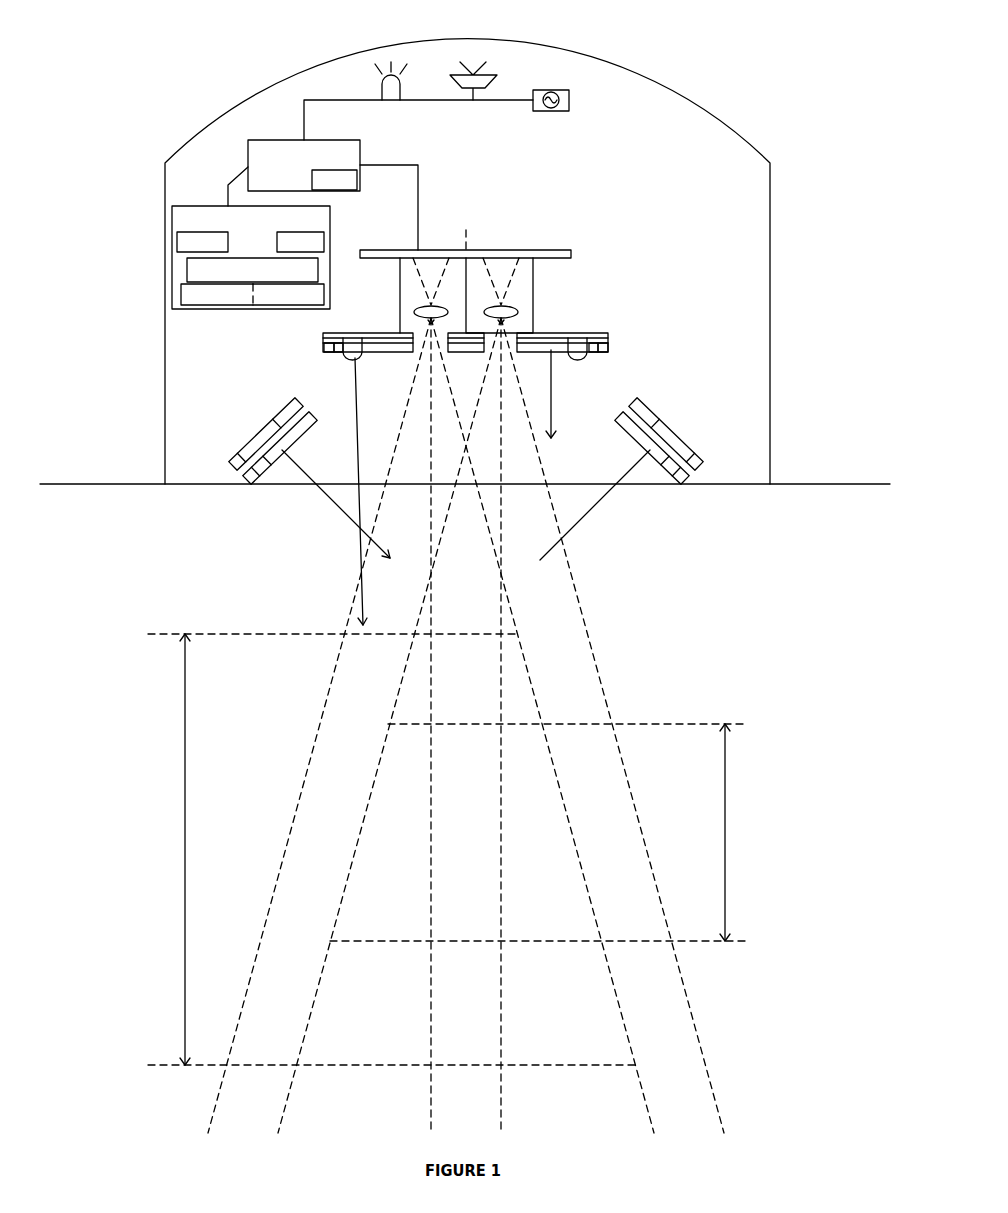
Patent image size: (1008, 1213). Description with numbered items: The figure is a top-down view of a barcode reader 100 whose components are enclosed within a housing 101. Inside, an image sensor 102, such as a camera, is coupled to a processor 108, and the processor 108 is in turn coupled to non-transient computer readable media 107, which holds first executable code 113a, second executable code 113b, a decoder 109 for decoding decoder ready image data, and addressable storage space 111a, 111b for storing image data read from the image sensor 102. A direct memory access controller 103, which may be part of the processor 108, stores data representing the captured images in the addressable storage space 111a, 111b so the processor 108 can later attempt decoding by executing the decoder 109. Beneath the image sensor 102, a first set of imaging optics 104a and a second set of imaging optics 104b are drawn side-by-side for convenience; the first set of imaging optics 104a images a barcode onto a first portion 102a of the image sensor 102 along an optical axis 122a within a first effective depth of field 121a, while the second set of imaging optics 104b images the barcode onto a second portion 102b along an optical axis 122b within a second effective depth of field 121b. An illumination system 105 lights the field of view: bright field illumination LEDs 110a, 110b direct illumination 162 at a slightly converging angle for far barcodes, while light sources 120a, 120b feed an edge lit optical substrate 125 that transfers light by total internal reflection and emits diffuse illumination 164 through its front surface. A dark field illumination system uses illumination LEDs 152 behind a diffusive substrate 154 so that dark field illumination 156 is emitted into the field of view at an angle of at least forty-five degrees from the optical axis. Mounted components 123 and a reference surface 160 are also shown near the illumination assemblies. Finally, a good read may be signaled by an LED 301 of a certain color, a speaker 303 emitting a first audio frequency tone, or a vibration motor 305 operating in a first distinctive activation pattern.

The barcode reader 100 is at (172, 110).
The housing 101 is at (722, 120).
The image sensor 102 is at (502, 250).
The first portion of the image sensor 102a is at (546, 250).
The second portion of the image sensor 102b is at (410, 250).
The direct memory access controller 103 is at (360, 180).
The first set of imaging optics 104a is at (520, 312).
The second set of imaging optics 104b is at (412, 312).
The illumination system 105 is at (320, 335).
The non-transient computer readable media 107 is at (251, 257).
The processor 108 is at (280, 189).
The decoder 109 is at (252, 270).
The illumination LED 110a is at (343, 360).
The illumination LED 110b is at (588, 360).
The addressable storage space 111a is at (288, 294).
The addressable storage space 111b is at (217, 294).
The first executable code 113a is at (202, 242).
The second executable code 113b is at (300, 242).
The light source 120a is at (322, 347).
The light source 120b is at (608, 347).
The first effective depth of field 121a is at (727, 856).
The second effective depth of field 121b is at (183, 922).
The optical axis 122a is at (503, 1110).
The optical axis 122b is at (430, 1103).
The detector panel 123 is at (236, 466).
The edge lit optical substrate 125 is at (392, 352).
The illumination LEDs 152 is at (252, 452).
The diffusive substrate 154 is at (262, 476).
The dark field illumination 156 is at (342, 516).
The window surface 160 is at (808, 483).
The illumination 162 is at (353, 400).
The illumination 164 is at (552, 398).
The LED 301 is at (378, 82).
The speaker 303 is at (497, 75).
The vibration motor 305 is at (569, 90).